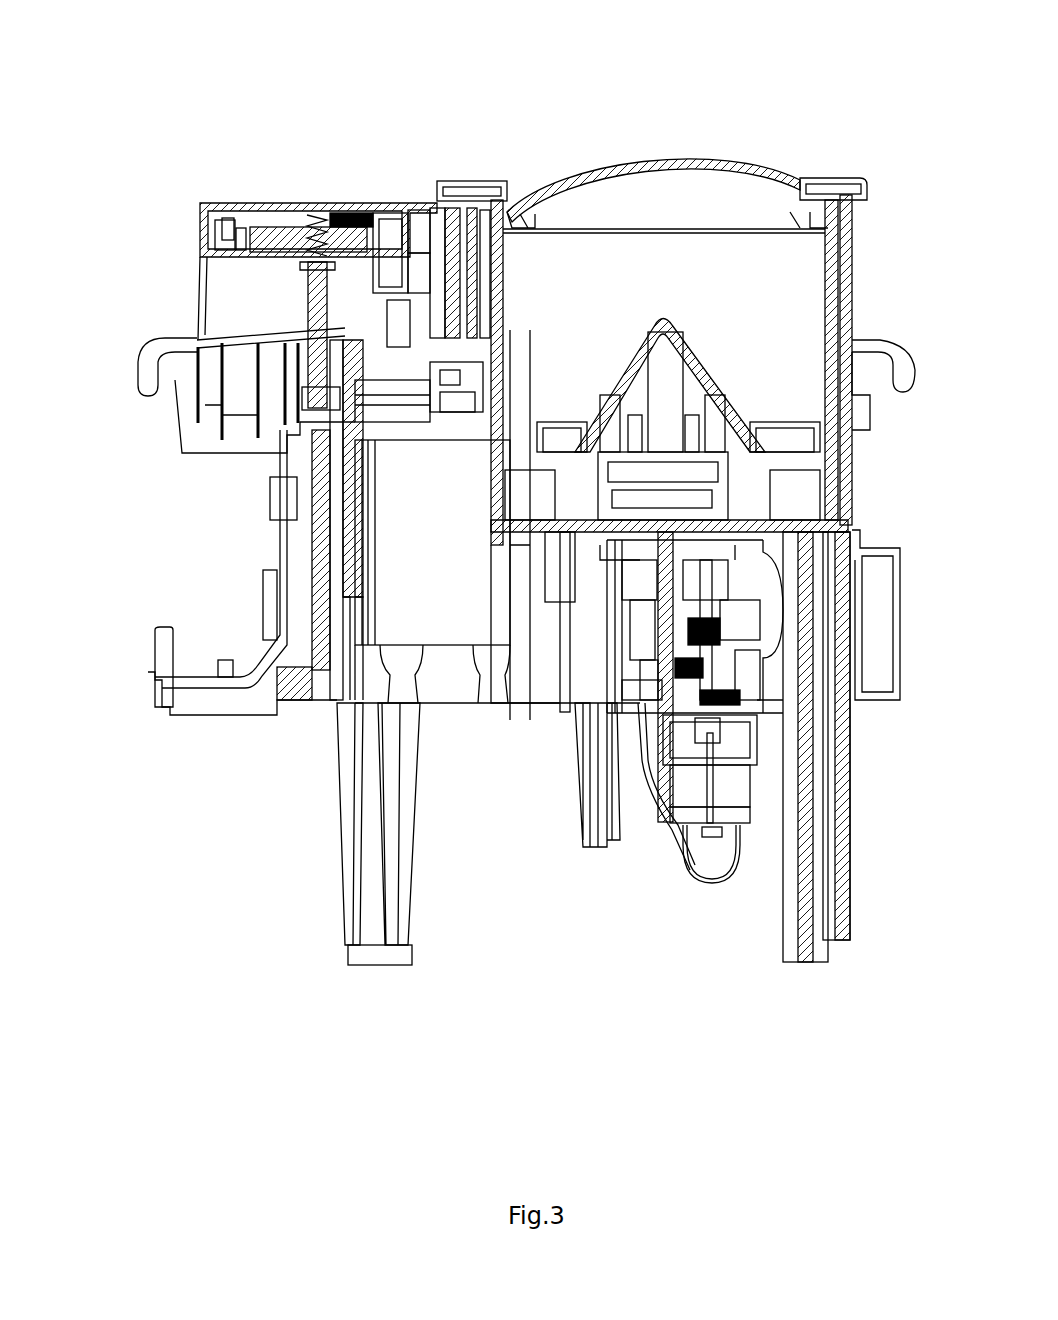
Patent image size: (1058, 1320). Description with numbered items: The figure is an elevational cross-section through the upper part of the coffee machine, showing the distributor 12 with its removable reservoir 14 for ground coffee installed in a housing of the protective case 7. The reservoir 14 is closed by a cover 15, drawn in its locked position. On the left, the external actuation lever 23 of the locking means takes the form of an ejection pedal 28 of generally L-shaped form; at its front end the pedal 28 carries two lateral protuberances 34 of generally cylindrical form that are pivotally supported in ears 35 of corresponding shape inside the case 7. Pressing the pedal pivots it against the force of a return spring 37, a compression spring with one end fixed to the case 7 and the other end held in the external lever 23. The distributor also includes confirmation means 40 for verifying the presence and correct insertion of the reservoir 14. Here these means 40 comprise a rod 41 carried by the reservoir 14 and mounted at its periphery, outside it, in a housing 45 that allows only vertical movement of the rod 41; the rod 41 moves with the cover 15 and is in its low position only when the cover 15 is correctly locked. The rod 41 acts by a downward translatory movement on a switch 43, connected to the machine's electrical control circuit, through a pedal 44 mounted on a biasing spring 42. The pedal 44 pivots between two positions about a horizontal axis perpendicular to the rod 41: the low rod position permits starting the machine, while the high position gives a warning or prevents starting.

The distributor 12 is at (615, 143).
The cover 15 is at (748, 170).
The removable reservoir 14 is at (838, 262).
The case 7 is at (848, 320).
The external actuation lever 23 is at (220, 201).
The ejection pedal 28 is at (253, 203).
The return spring 37 is at (306, 212).
The housing 45 is at (425, 212).
The confirmation means 40 is at (465, 177).
The rod 41 is at (487, 200).
The lateral protuberances 34 is at (233, 223).
The ears 35 is at (243, 240).
The biasing spring 42 is at (442, 387).
The pedal 44 is at (443, 403).
The switch 43 is at (425, 425).